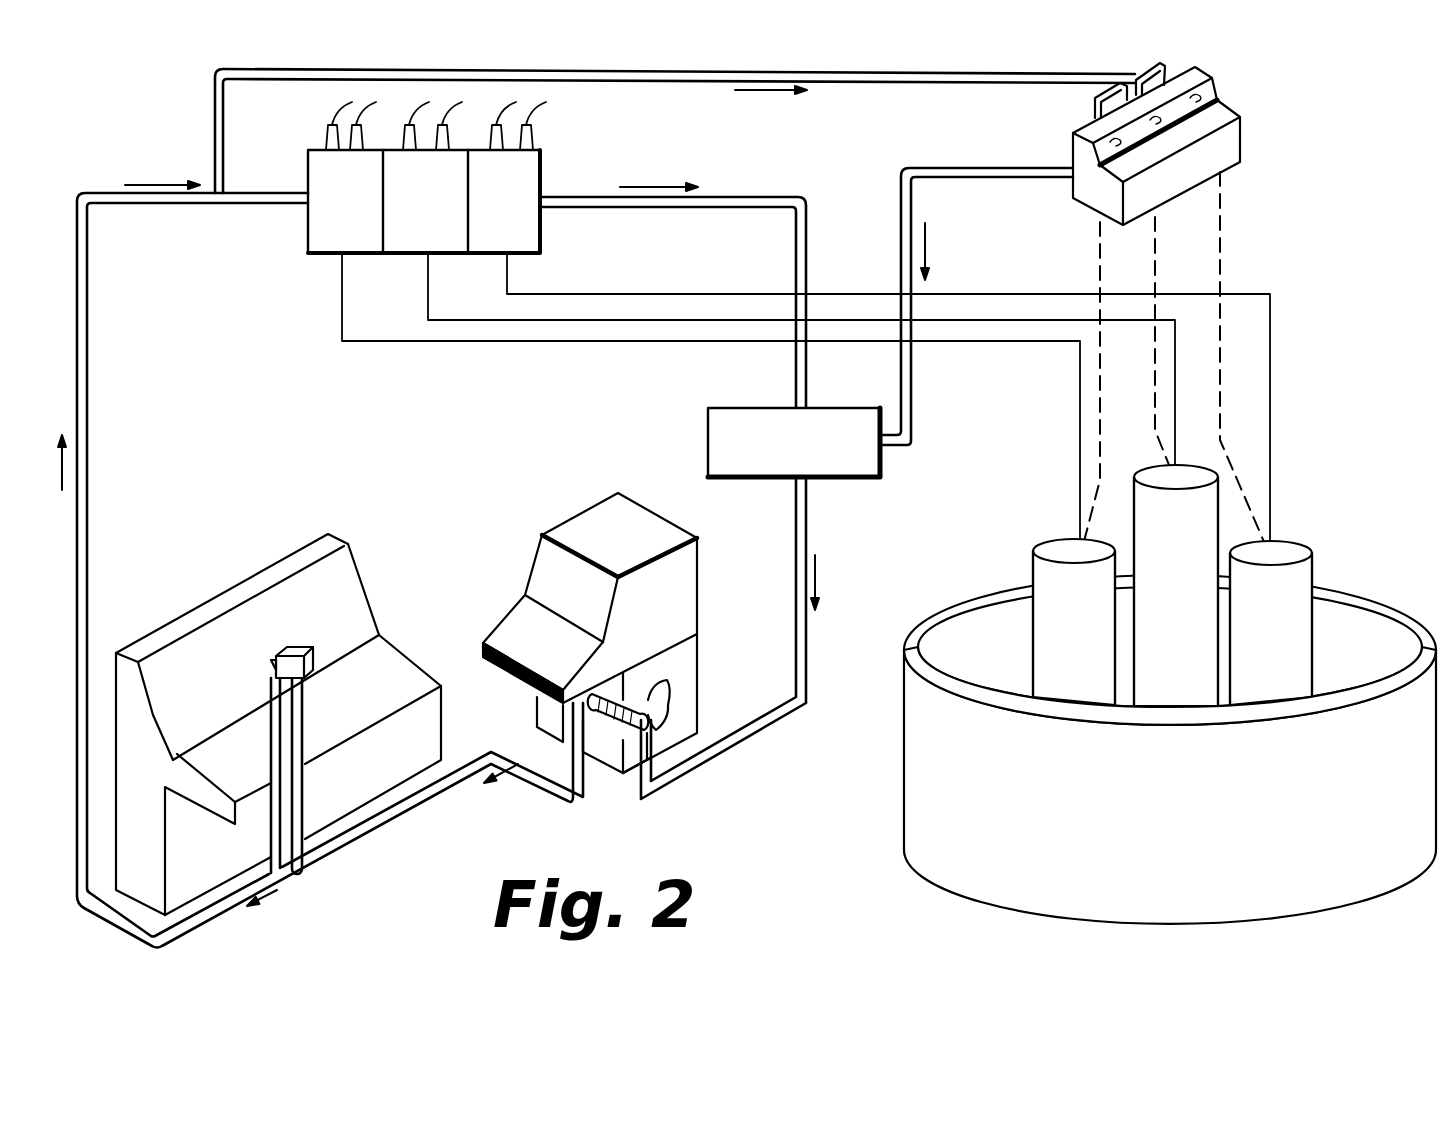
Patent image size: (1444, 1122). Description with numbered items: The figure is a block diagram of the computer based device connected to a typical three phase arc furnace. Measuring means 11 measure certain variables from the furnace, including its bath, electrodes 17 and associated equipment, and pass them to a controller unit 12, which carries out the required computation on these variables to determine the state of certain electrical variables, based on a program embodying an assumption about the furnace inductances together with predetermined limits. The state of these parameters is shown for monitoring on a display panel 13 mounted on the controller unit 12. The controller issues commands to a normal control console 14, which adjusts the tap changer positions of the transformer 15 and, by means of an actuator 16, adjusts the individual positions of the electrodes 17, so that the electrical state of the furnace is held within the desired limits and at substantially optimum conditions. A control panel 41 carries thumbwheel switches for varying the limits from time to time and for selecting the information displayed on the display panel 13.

The measuring means 11 is at (732, 408).
The controller unit 12 is at (637, 508).
The display panel 13 is at (558, 560).
The control console 14 is at (348, 512).
The transformer 15 is at (545, 172).
The actuator 16 is at (1238, 135).
The electrode 17 is at (1040, 548).
The control panel 41 is at (518, 628).